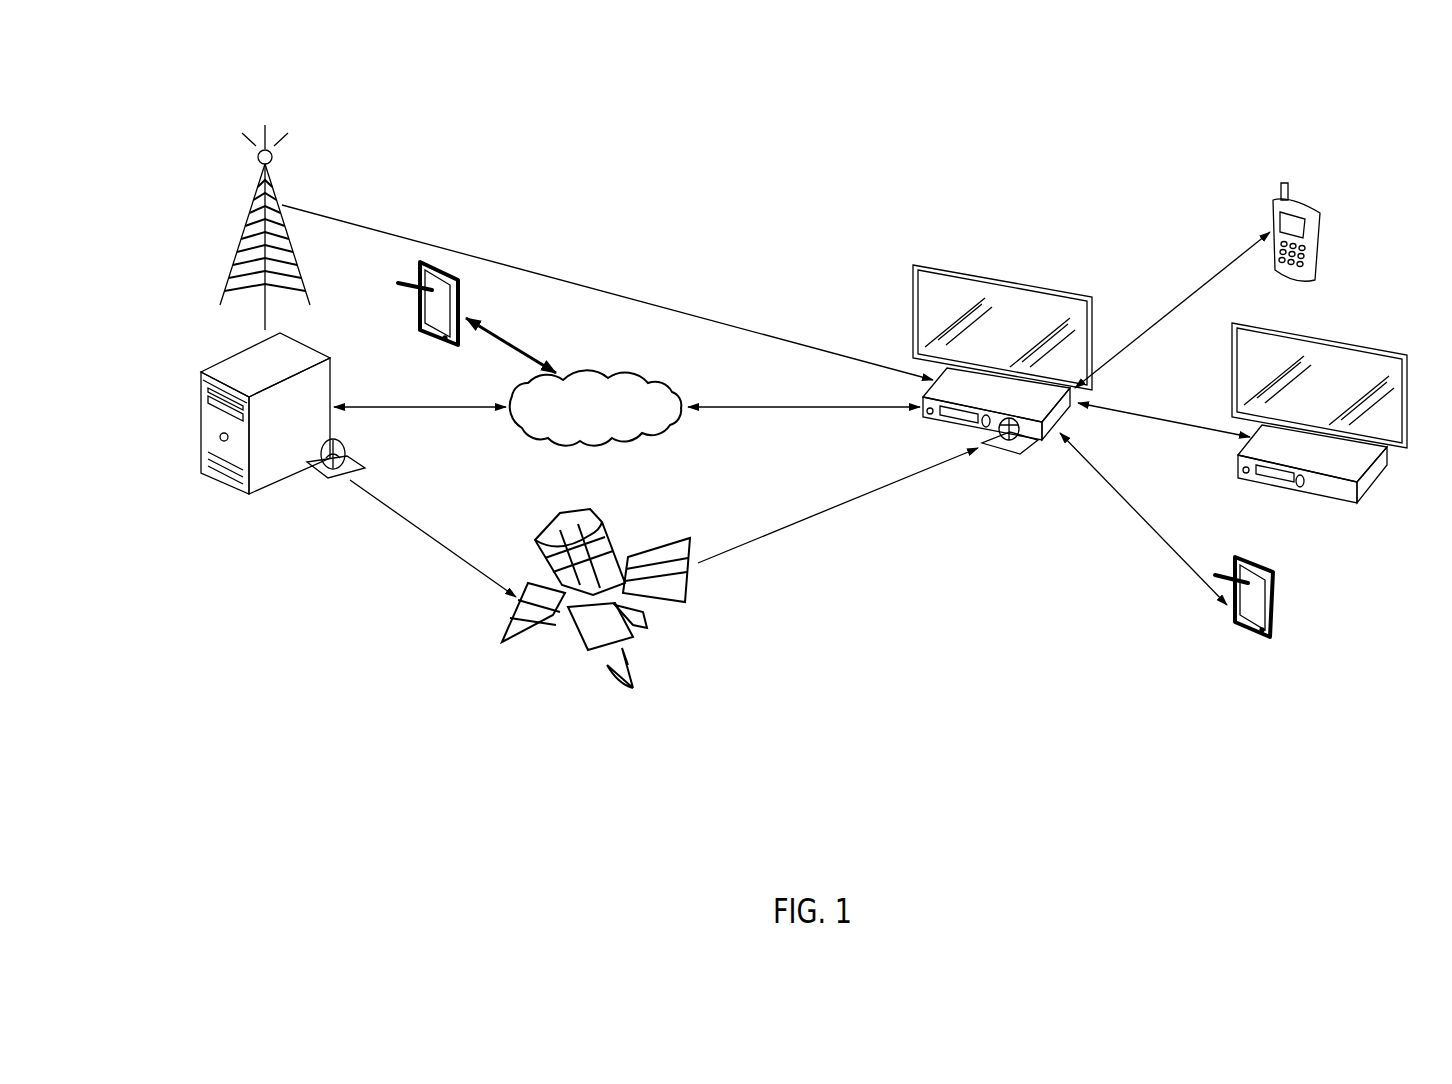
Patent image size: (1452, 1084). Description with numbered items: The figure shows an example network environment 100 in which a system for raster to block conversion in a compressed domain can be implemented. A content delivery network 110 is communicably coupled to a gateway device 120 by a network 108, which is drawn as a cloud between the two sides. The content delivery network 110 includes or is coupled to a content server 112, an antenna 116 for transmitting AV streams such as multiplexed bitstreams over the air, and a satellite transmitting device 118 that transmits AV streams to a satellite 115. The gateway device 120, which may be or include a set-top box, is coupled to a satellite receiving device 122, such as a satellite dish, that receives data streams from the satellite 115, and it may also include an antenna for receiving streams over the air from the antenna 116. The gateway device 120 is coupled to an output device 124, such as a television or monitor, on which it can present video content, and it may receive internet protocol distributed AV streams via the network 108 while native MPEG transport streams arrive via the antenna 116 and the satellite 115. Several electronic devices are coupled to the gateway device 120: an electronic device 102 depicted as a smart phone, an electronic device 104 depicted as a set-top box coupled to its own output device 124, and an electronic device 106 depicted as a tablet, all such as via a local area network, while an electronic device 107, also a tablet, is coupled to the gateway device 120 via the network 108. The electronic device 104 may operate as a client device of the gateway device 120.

The network environment 100 is at (1030, 122).
The electronic device 102 is at (1322, 240).
The electronic device 104 is at (1372, 472).
The electronic device 106 is at (1277, 615).
The electronic device 107 is at (418, 268).
The network 108 is at (624, 441).
The content delivery network 110 is at (205, 515).
The content server 112 is at (201, 410).
The satellite 115 is at (645, 625).
The antenna 116 is at (238, 242).
The satellite transmitting device 118 is at (346, 452).
The gateway device 120 is at (1058, 427).
The satellite receiving device 122 is at (1008, 450).
The output device 124 is at (1027, 291).